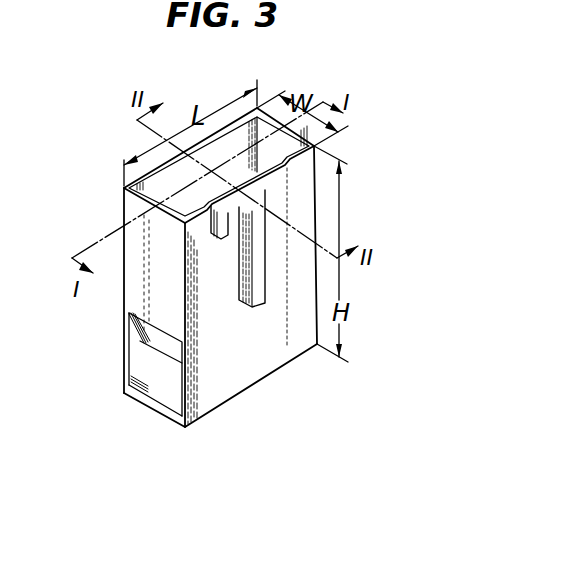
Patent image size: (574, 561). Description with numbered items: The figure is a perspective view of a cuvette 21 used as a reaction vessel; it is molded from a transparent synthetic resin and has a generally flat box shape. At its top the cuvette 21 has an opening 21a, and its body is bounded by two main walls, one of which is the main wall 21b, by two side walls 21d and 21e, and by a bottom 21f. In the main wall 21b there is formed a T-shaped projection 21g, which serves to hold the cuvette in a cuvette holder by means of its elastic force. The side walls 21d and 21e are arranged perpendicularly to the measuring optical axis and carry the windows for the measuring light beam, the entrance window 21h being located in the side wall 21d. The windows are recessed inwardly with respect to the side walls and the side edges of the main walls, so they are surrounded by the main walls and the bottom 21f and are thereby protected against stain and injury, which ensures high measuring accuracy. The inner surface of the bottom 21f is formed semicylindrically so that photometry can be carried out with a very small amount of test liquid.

The cuvette 21 is at (222, 120).
The opening 21a is at (157, 180).
The main wall 21b is at (290, 343).
The side wall 21d is at (136, 292).
The side wall 21e is at (300, 142).
The bottom 21f is at (150, 408).
The T-shaped projection 21g is at (258, 290).
The entrance window 21h is at (158, 370).